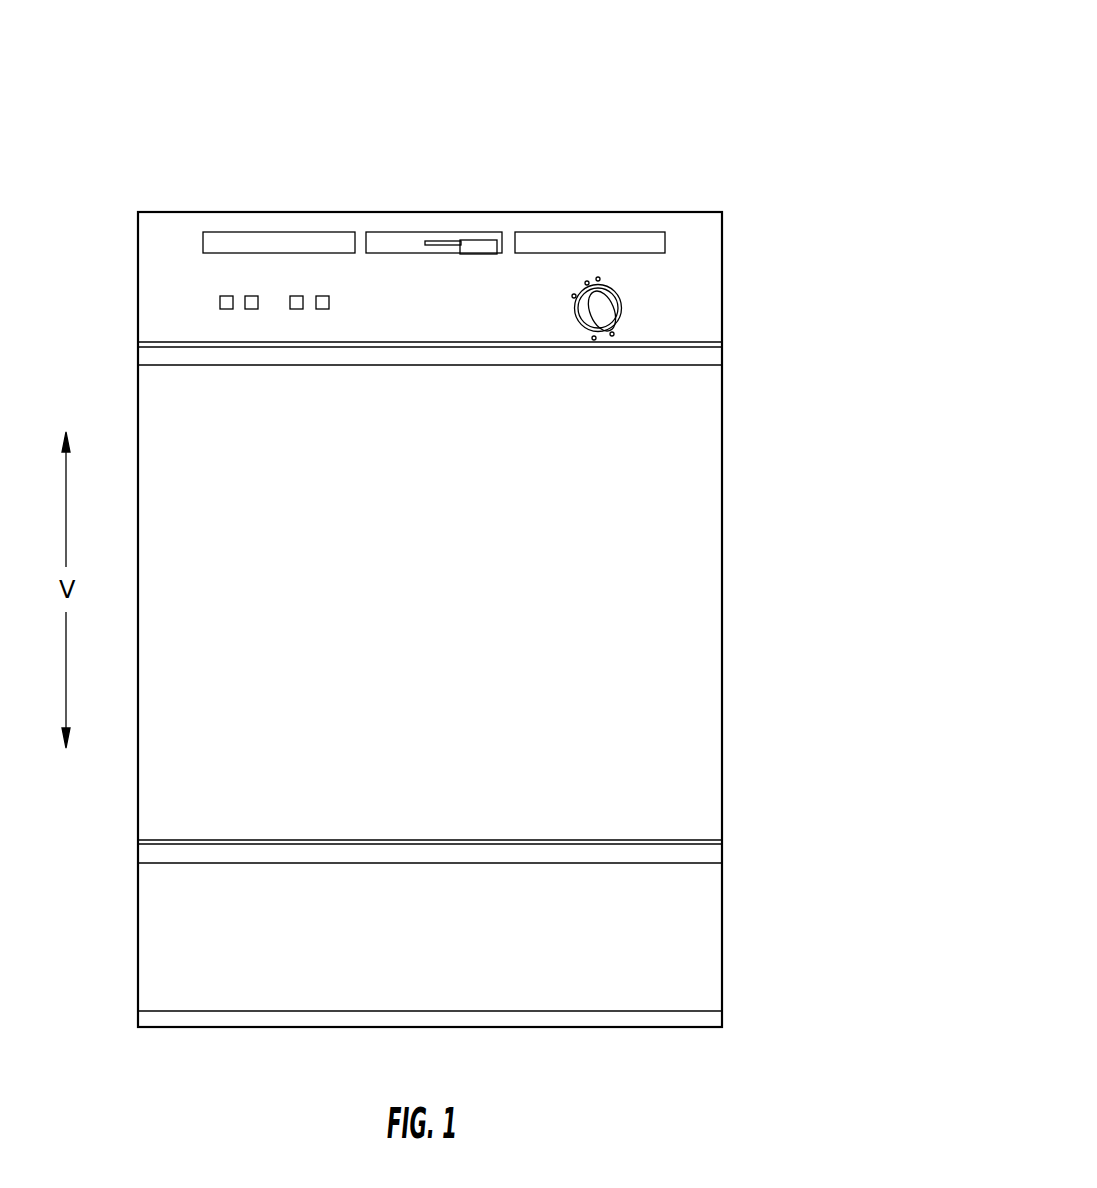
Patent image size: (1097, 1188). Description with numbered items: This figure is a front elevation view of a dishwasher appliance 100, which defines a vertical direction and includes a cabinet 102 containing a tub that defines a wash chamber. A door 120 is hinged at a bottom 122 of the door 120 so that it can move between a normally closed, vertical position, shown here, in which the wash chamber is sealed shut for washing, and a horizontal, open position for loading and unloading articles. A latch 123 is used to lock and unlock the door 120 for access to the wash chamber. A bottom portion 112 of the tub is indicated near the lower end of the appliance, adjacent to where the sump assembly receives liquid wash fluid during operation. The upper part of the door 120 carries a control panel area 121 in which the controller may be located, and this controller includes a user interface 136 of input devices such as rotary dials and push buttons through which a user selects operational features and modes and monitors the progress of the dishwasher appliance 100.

The dishwasher appliance 100 is at (654, 68).
The cabinet 102 is at (730, 930).
The bottom portion 112 is at (133, 1018).
The door 120 is at (682, 579).
The control panel area 121 is at (698, 236).
The bottom 122 is at (730, 828).
The latch 123 is at (488, 240).
The user interface 136 is at (297, 296).